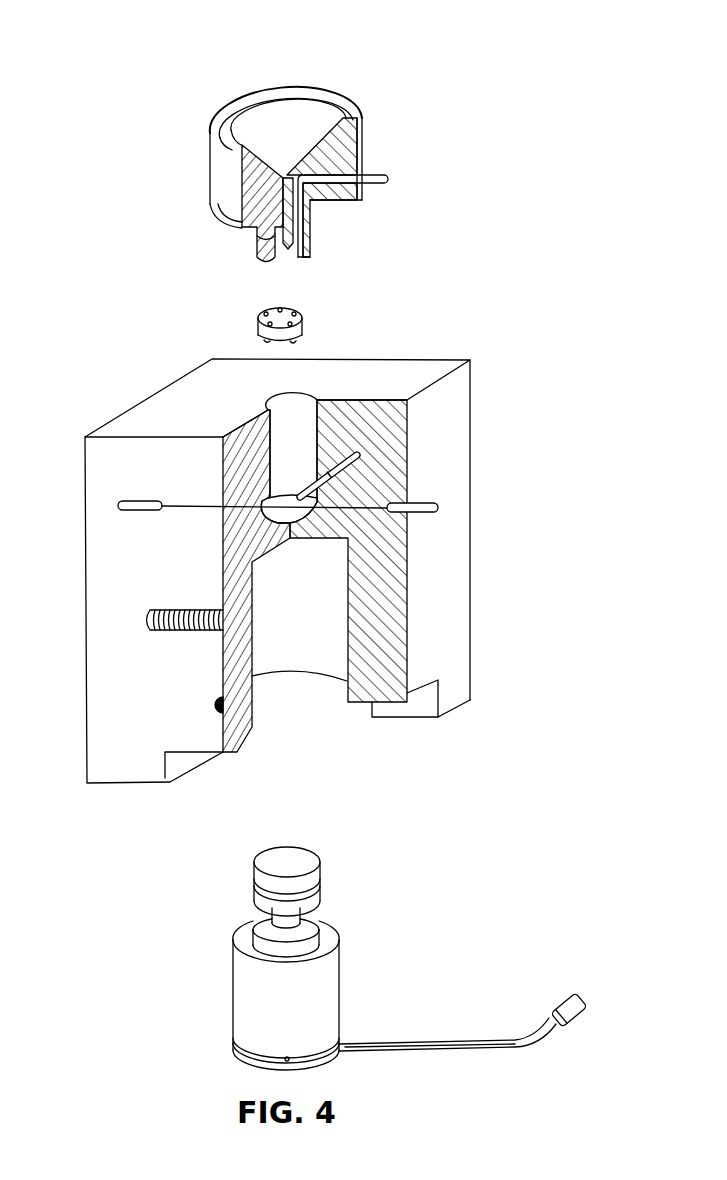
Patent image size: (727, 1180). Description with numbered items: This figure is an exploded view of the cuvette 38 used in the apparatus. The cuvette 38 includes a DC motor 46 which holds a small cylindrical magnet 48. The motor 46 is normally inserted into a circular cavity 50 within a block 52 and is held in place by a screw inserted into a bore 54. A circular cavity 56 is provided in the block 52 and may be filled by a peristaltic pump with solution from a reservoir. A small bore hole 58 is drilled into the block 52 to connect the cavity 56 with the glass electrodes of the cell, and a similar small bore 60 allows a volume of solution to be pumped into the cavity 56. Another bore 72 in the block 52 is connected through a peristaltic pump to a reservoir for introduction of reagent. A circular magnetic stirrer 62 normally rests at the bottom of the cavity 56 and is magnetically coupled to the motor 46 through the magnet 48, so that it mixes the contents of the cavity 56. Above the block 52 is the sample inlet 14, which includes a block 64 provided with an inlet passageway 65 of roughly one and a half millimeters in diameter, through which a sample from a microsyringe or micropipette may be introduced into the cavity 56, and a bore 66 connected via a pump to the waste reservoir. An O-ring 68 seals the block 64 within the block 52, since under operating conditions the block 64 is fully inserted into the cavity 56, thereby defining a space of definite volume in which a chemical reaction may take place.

The sample inlet 14 is at (303, 142).
The block 64 is at (220, 175).
The inlet passageway 65 is at (283, 178).
The bore 66 is at (386, 174).
The O-ring 68 is at (307, 232).
The magnetic stirrer 62 is at (294, 308).
The cuvette 38 is at (293, 548).
The block 52 is at (455, 632).
The circular cavity 56 is at (291, 402).
The small bore 60 is at (360, 458).
The small bore hole 58 is at (439, 506).
The bore 72 is at (127, 508).
The bore 54 is at (153, 632).
The circular cavity 50 is at (254, 700).
The DC motor 46 is at (410, 946).
The cylindrical magnet 48 is at (304, 860).